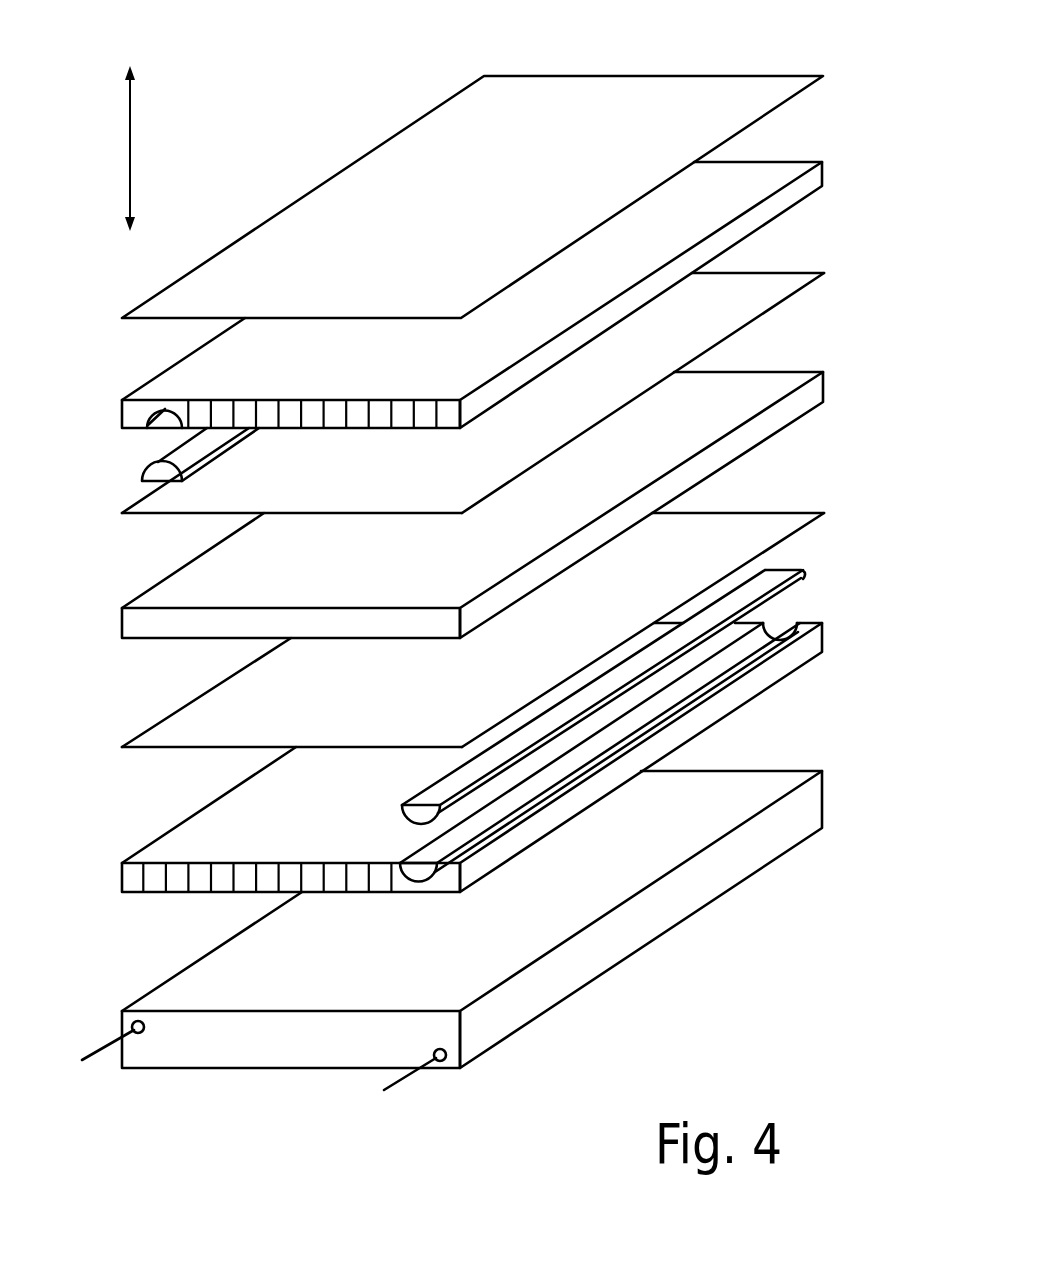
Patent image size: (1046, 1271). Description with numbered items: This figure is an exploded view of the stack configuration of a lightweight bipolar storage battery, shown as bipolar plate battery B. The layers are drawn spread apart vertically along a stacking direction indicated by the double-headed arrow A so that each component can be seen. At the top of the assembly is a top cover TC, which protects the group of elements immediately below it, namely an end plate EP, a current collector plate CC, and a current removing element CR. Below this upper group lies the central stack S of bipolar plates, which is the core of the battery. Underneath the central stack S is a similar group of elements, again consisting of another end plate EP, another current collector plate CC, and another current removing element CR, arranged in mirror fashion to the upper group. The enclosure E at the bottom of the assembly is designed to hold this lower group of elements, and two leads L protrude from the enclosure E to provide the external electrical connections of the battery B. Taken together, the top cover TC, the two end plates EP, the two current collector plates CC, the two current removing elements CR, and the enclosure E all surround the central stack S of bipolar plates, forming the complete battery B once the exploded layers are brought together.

The bipolar plate battery B is at (384, 112).
The top cover TC is at (620, 88).
The end plate EP is at (172, 830).
The current collector plate CC is at (783, 508).
The current removing element CR is at (155, 462).
The central stack of bipolar plates S is at (148, 590).
The enclosure E is at (682, 918).
The leads L is at (117, 1037).
The stacking direction A is at (111, 148).